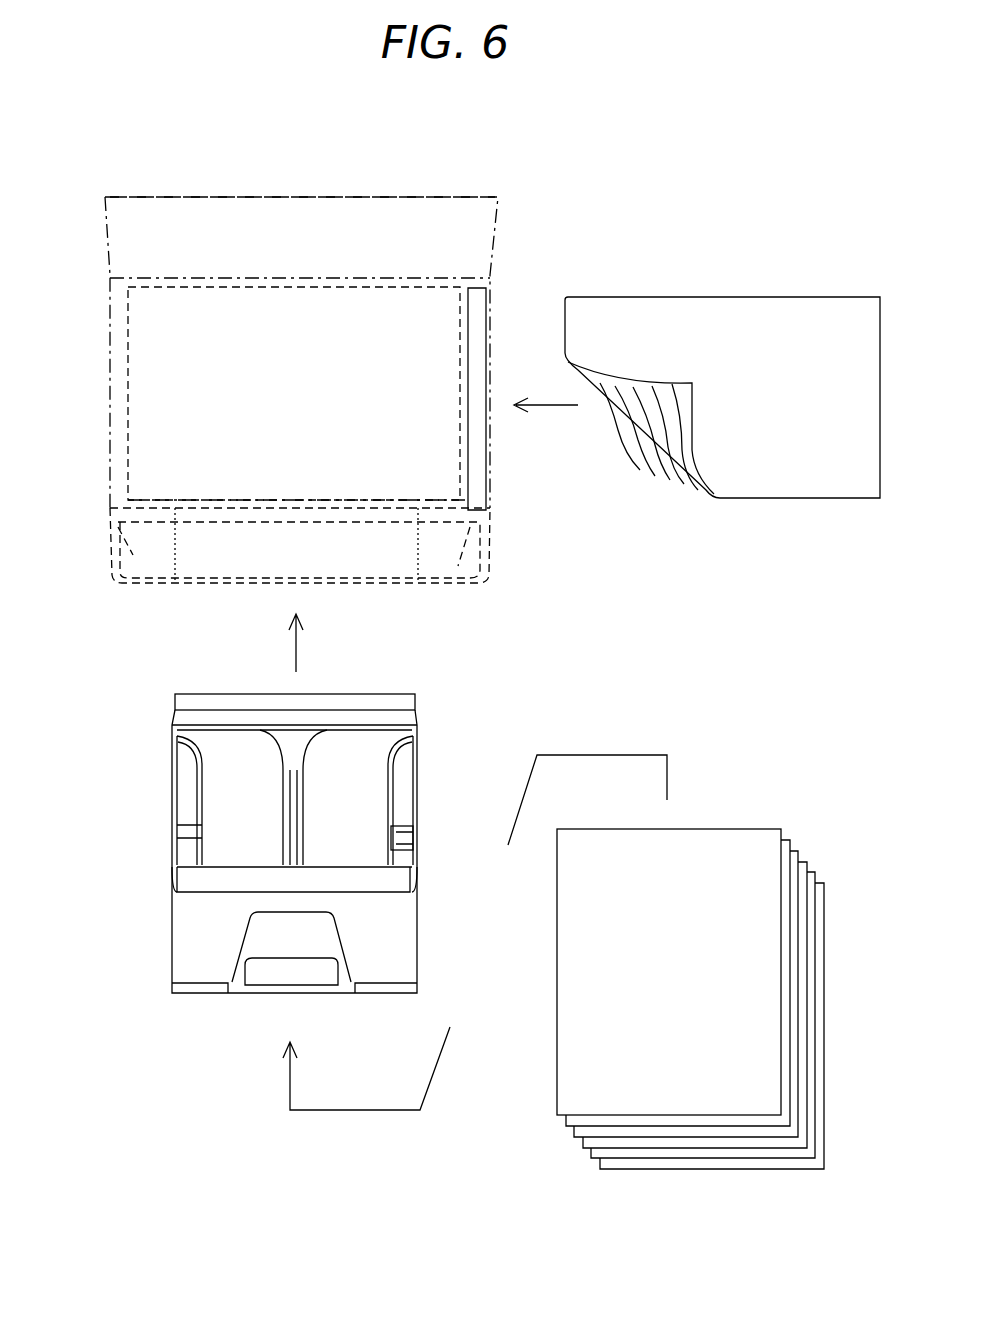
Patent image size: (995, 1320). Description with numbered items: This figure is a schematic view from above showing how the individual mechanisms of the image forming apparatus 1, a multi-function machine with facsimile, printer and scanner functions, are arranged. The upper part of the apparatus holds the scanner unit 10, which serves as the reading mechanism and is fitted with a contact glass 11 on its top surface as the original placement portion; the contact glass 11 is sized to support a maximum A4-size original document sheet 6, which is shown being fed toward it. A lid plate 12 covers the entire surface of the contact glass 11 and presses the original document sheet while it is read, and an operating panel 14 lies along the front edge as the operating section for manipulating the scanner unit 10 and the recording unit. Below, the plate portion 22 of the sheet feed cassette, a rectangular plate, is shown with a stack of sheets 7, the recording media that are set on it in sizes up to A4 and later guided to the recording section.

The image forming apparatus 1 is at (88, 252).
The original document sheet 6 is at (791, 320).
The sheets 7 is at (734, 840).
The scanner unit 10 is at (107, 335).
The contact glass 11 is at (147, 417).
The lid plate 12 is at (292, 207).
The operating panel 14 is at (158, 555).
The plate portion 22 is at (185, 932).